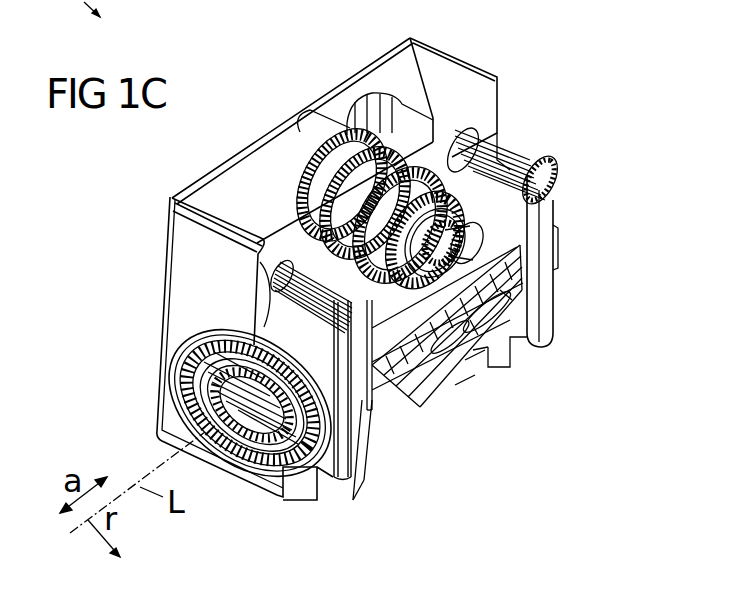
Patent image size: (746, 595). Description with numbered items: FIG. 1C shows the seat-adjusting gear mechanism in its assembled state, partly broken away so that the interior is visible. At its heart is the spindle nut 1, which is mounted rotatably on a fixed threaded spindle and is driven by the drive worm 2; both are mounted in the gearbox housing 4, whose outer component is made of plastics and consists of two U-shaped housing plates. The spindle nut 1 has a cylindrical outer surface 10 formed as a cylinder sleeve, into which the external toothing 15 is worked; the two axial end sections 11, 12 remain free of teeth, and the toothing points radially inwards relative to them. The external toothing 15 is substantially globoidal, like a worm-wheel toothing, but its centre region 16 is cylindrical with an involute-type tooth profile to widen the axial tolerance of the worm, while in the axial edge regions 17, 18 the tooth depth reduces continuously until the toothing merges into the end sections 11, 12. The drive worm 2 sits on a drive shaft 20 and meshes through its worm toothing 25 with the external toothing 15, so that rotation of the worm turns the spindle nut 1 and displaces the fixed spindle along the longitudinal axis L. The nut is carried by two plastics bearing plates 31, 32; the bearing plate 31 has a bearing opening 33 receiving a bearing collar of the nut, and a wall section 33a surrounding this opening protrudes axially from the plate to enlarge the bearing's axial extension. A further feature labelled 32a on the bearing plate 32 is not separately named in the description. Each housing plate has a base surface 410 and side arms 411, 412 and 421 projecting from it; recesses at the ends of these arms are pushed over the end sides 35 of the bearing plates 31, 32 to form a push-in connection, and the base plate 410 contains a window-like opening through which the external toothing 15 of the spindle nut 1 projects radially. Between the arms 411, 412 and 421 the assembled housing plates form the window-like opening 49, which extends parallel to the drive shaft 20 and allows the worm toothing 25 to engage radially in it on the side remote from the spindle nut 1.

The spindle nut 1 is at (445, 438).
The drive worm 2 is at (497, 138).
The gearbox housing 4 is at (258, 119).
The outer surface 10 is at (393, 413).
The axial end section 11 is at (370, 455).
The axial end section 12 is at (505, 303).
The external toothing 15 is at (462, 383).
The centre region 16 is at (470, 365).
The axial edge region 17 is at (365, 300).
The axial edge region 18 is at (503, 293).
The drive shaft 20 is at (470, 230).
The worm toothing 25 is at (545, 155).
The bearing plate 31 is at (278, 318).
The bearing plate 32 is at (460, 169).
The post edge 32a is at (560, 255).
The bearing opening 33 is at (200, 392).
The wall section 33a is at (287, 473).
The end sides 35 is at (540, 187).
The window-like opening 49 is at (398, 110).
The base surface 410 is at (367, 93).
The side arm 411 is at (190, 257).
The side arm 412 is at (467, 63).
The side arm 421 is at (213, 10).